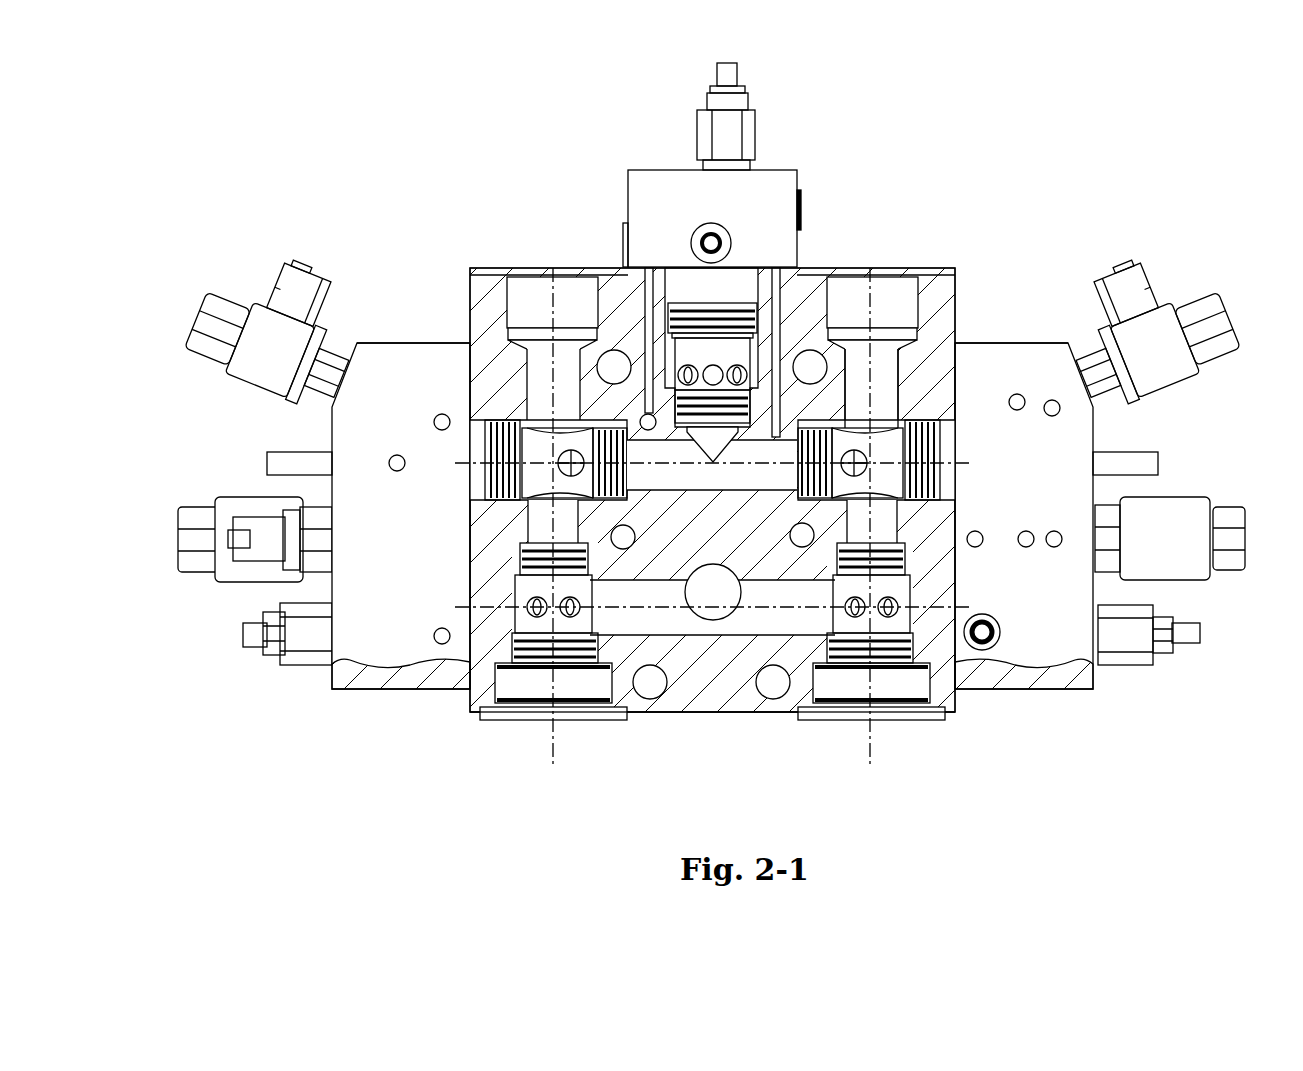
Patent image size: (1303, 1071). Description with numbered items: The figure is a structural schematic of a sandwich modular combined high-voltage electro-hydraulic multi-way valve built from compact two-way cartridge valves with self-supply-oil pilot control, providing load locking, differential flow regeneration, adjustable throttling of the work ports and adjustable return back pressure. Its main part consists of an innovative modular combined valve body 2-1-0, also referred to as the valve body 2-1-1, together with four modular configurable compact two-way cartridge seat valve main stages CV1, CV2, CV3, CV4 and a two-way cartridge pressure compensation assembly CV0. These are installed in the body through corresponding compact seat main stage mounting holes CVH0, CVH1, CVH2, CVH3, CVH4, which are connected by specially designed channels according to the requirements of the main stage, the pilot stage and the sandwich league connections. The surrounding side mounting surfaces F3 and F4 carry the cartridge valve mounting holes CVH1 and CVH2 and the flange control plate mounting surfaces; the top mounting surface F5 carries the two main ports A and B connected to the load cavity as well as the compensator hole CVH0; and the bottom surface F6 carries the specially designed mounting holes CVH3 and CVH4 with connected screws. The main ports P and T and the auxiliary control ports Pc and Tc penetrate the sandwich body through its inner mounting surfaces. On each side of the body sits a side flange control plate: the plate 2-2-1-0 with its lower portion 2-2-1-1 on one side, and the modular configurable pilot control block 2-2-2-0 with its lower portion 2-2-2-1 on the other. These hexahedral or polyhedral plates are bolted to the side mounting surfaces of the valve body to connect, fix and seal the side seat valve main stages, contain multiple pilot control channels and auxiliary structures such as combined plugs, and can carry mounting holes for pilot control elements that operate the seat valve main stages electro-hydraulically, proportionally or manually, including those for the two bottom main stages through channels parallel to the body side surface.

The valve body 2-1-0 is at (933, 297).
The valve body 2-1-1 is at (858, 423).
The side flange control plate 2-2-1-0 is at (390, 430).
The side flange control plate 2-2-1-1 is at (370, 697).
The modular configurable pilot control block 2-2-2-0 is at (1003, 458).
The side flange control plate 2-2-2-1 is at (1023, 675).
The surrounding mounting surface F3 is at (468, 402).
The surrounding mounting surface F4 is at (1035, 345).
The top mounting surface F5 is at (500, 303).
The bottom surface F6 is at (722, 713).
The mounting hole CVH0 is at (673, 367).
The pressure compensation assembly CV0 is at (767, 313).
The mounting hole CVH1 is at (575, 430).
The seat valve main stage CV1 is at (520, 430).
The mounting hole CVH2 is at (908, 390).
The seat valve main stage CV2 is at (945, 420).
The mounting hole CVH3 is at (512, 620).
The seat valve main stage CV3 is at (563, 622).
The mounting hole CVH4 is at (908, 577).
The seat valve main stage CV4 is at (865, 627).
The main port P is at (626, 262).
The main port A is at (552, 313).
The main port B is at (870, 313).
The auxiliary port Pc is at (636, 548).
The auxiliary port Tc is at (791, 547).
The main port T is at (712, 599).